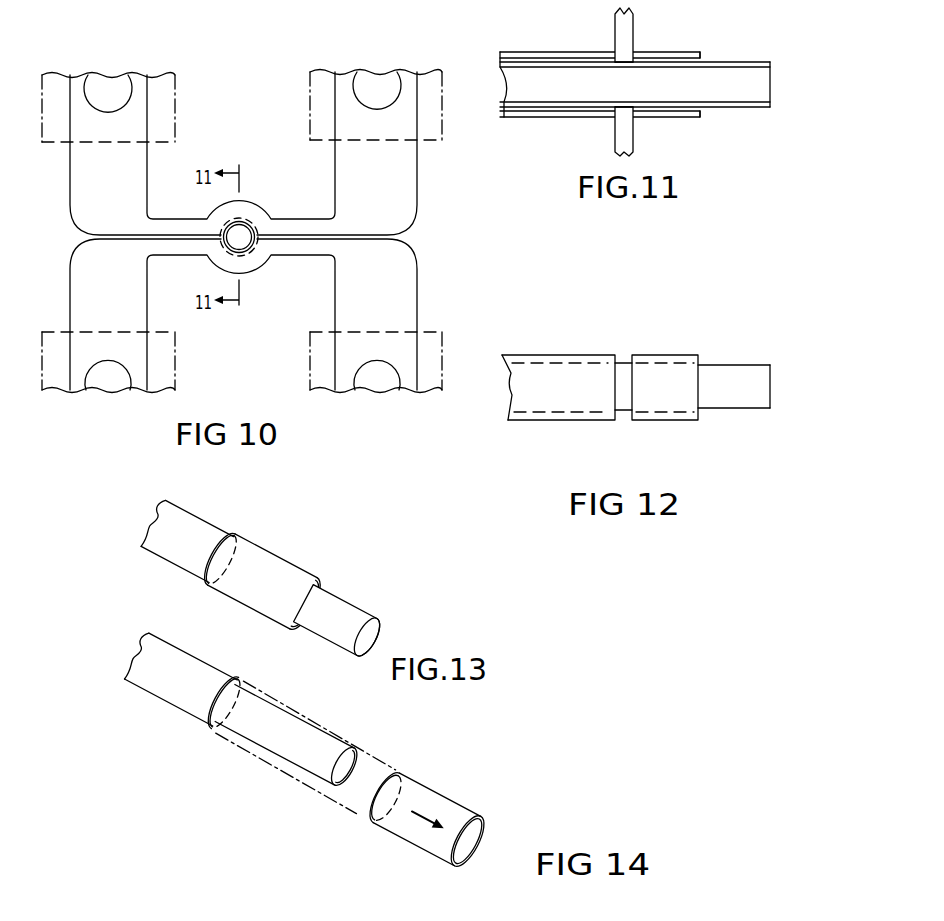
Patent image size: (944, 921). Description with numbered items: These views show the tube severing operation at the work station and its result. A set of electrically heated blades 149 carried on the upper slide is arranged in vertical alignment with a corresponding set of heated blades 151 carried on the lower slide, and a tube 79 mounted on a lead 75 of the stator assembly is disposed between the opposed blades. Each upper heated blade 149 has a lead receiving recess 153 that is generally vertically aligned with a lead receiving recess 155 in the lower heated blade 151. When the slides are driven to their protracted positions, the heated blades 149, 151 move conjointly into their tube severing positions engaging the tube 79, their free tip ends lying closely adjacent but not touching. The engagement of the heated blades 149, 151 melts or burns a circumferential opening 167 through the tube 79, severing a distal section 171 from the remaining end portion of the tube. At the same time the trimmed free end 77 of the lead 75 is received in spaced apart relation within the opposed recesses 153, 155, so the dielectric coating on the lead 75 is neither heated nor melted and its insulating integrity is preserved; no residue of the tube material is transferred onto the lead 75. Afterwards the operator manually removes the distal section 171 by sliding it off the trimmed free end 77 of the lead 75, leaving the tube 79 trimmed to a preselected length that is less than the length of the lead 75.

In FIG. 11, the lead 75 is at (727, 72).
In FIG. 12, the lead 75 is at (735, 410).
In FIG. 13, the lead 75 is at (350, 603).
In FIG. 14, the lead 75 is at (318, 735).
In FIG. 11, the trimmed free end 77 is at (768, 86).
In FIG. 12, the trimmed free end 77 is at (758, 372).
In FIG. 13, the trimmed free end 77 is at (376, 636).
In FIG. 14, the trimmed free end 77 is at (335, 790).
In FIG. 11, the tube 79 is at (566, 118).
In FIG. 12, the tube 79 is at (520, 420).
In FIG. 13, the tube 79 is at (148, 515).
In FIG. 14, the tube 79 is at (128, 652).
In FIG. 10, the heated blade 149 is at (138, 100).
In FIG. 11, the heated blade 149 is at (615, 26).
In FIG. 10, the heated blade 151 is at (136, 358).
In FIG. 11, the heated blade 151 is at (634, 133).
In FIG. 10, the lead receiving recess 153 is at (247, 221).
In FIG. 11, the lead receiving recess 153 is at (626, 68).
In FIG. 10, the lead receiving recess 155 is at (250, 253).
In FIG. 11, the lead receiving recess 155 is at (632, 105).
In FIG. 12, the circumferential opening 167 is at (626, 355).
In FIG. 13, the circumferential opening 167 is at (206, 551).
In FIG. 14, the circumferential opening 167 is at (224, 702).
In FIG. 11, the distal section 171 is at (684, 115).
In FIG. 12, the distal section 171 is at (697, 355).
In FIG. 13, the distal section 171 is at (302, 570).
In FIG. 14, the distal section 171 is at (433, 790).